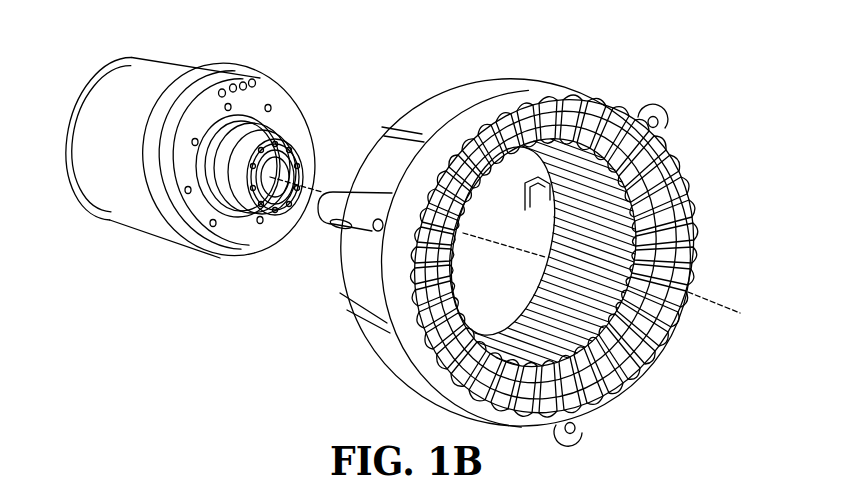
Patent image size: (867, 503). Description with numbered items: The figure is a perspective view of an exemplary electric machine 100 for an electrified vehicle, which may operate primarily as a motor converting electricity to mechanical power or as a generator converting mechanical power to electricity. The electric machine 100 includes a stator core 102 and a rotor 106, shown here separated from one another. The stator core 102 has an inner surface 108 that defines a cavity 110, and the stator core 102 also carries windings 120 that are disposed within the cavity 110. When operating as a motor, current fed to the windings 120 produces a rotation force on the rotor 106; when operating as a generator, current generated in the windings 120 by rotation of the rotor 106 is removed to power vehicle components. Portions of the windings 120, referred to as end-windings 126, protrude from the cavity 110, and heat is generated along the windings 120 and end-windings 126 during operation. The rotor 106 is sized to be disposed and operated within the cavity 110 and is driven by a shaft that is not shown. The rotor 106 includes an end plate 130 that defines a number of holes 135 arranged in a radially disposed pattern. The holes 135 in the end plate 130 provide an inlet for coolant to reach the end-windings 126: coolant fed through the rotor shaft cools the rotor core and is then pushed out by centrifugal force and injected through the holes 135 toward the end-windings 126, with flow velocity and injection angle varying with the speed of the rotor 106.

The electric machine 100 is at (686, 54).
The stator core 102 is at (554, 82).
The rotor 106 is at (137, 228).
The inner surface 108 is at (670, 157).
The cavity 110 is at (500, 222).
The windings 120 is at (683, 198).
The end-windings 126 is at (690, 253).
The end plate 130 is at (237, 240).
The hole 135 is at (197, 197).